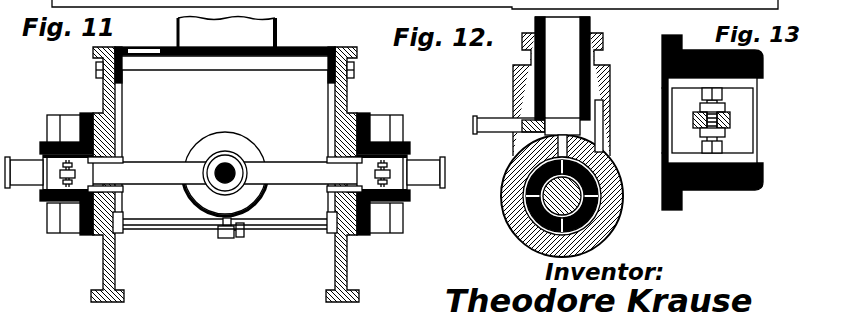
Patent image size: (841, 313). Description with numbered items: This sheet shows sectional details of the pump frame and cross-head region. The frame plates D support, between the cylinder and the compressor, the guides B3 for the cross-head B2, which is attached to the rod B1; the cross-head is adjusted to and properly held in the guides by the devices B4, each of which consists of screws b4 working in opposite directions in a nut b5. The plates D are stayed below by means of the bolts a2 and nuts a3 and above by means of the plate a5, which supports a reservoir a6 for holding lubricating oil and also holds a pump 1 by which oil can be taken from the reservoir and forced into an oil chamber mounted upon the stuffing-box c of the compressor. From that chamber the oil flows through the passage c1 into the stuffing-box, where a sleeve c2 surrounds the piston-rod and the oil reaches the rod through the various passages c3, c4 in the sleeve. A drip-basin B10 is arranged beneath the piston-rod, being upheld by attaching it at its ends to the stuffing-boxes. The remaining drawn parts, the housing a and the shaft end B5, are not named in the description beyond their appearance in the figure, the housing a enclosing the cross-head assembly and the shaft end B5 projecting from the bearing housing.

In FIG. 11, the plate D is at (110, 276).
In FIG. 11, the housing a is at (225, 142).
In FIG. 11, the tie rod a2 is at (286, 224).
In FIG. 11, the rod nut a3 is at (403, 243).
In FIG. 11, the cover plate a5 is at (225, 49).
In FIG. 11, the top box a6 is at (226, 36).
In FIG. 11, the rod B1 is at (237, 165).
In FIG. 11, the cross-head B2 is at (225, 163).
In FIG. 11, the guides B3 is at (34, 211).
In FIG. 13, the guides B3 is at (763, 71).
In FIG. 11, the devices B4 is at (430, 150).
In FIG. 13, the devices B4 is at (727, 105).
In FIG. 11, the shaft end B5 is at (225, 196).
In FIG. 11, the drip-basin B10 is at (246, 201).
In FIG. 12, the stem 1 is at (562, 68).
In FIG. 12, the stuffing-box c is at (520, 170).
In FIG. 12, the passage c1 is at (562, 137).
In FIG. 12, the sleeve c2 is at (603, 160).
In FIG. 12, the passage c3 is at (584, 184).
In FIG. 12, the passage c4 is at (590, 196).
In FIG. 13, the screws b4 is at (700, 100).
In FIG. 13, the nut b5 is at (728, 125).